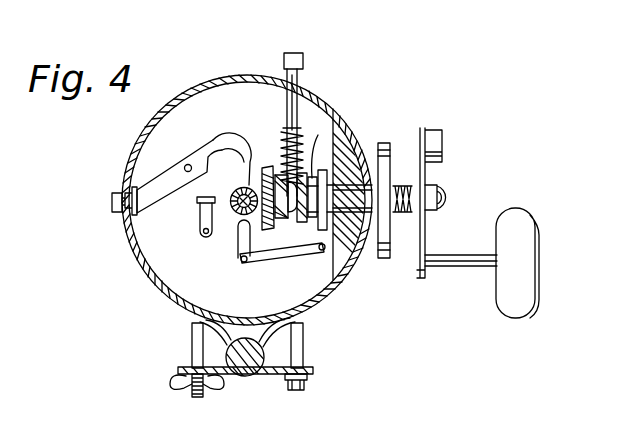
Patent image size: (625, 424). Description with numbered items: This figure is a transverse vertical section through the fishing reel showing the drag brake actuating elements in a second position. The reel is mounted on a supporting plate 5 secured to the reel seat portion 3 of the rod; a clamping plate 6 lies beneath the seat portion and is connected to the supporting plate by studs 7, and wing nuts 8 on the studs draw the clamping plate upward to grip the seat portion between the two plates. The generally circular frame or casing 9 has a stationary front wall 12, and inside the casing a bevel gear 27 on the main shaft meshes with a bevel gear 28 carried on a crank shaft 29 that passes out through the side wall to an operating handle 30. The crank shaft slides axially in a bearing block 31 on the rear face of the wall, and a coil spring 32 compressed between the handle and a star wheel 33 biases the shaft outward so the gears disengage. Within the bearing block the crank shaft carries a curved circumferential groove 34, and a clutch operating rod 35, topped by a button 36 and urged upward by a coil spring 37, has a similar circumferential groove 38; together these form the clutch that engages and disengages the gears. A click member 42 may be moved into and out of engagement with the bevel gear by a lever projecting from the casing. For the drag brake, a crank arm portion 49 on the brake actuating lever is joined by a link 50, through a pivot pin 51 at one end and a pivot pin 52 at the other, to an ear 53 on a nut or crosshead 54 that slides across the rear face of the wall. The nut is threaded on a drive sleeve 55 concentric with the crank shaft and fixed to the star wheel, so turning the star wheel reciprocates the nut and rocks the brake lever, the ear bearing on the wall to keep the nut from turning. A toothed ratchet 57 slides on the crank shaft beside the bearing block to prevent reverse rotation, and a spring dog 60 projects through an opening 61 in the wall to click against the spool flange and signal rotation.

The reel seat portion 3 is at (250, 377).
The supporting plate 5 is at (318, 308).
The clamping plate 6 is at (312, 372).
The studs 7 is at (304, 341).
The wing nuts 8 is at (306, 381).
The frame or casing 9 is at (241, 73).
The front wall 12 is at (312, 106).
The bevel gear 27 is at (244, 193).
The bevel gear 28 is at (270, 165).
The crank shaft 29 is at (412, 184).
The operating handle 30 is at (428, 244).
The bearing block 31 is at (319, 148).
The coil spring 32 is at (425, 180).
The star wheel 33 is at (388, 258).
The circumferential groove 34 is at (310, 216).
The clutch operating shaft or rod 35 is at (299, 86).
The button 36 is at (293, 52).
The coil spring 37 is at (286, 132).
The circumferential groove 38 is at (237, 230).
The click member 42 is at (165, 164).
The crank arm portion 49 is at (237, 244).
The link 50 is at (260, 264).
The pivot pin 51 is at (243, 268).
The pivot pin 52 is at (336, 266).
The ear 53 is at (325, 232).
The nut or crosshead 54 is at (346, 182).
The drive sleeve 55 is at (372, 213).
The toothed ratchet 57 is at (336, 178).
The spring dog 60 is at (199, 220).
The opening 61 is at (210, 186).